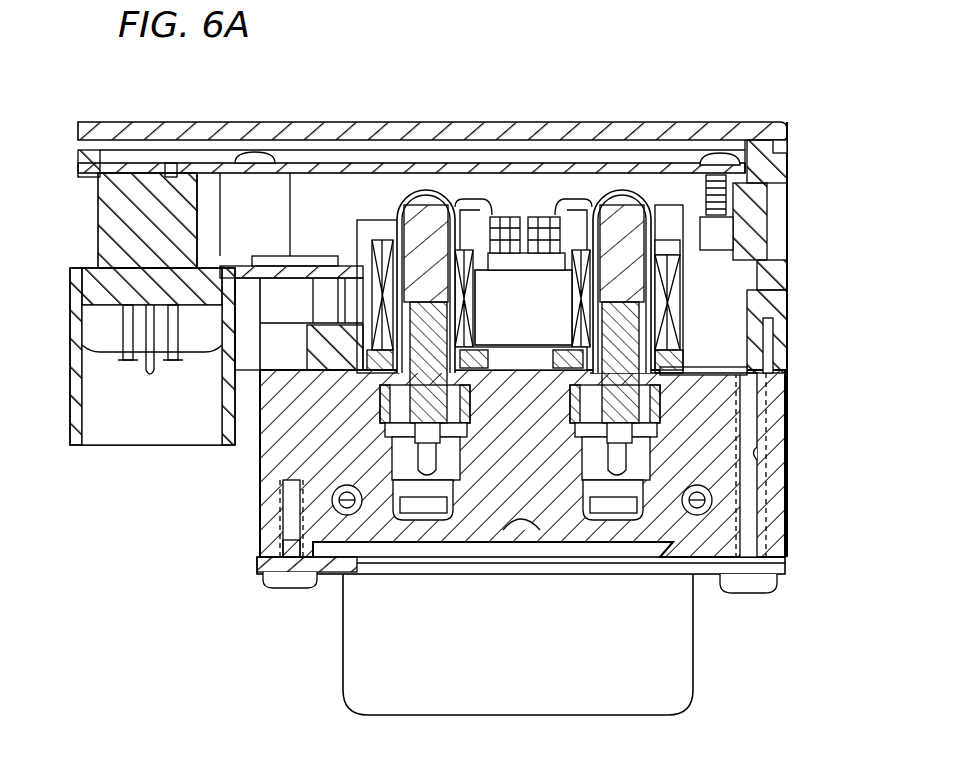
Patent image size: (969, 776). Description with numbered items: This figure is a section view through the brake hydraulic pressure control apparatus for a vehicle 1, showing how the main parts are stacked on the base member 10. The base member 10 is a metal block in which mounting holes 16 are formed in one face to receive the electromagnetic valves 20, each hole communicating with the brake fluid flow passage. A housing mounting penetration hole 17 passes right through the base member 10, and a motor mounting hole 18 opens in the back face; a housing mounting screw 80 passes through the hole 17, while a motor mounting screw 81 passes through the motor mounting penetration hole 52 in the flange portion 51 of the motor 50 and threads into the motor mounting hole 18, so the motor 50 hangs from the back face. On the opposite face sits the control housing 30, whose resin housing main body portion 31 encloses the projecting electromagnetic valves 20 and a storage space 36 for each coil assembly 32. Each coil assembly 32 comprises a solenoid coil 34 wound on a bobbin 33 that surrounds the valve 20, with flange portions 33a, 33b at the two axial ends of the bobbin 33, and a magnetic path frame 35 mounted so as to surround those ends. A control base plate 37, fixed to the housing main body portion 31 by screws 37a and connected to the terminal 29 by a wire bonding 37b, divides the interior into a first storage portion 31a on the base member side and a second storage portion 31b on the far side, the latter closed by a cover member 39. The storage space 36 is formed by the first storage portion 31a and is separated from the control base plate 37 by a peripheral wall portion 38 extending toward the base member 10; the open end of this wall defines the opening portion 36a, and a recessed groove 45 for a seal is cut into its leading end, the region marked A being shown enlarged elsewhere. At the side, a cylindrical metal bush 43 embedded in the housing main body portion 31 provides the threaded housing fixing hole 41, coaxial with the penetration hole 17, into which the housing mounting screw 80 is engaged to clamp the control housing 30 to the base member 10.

The brake hydraulic pressure control apparatus for a vehicle 1 is at (662, 88).
The base member 10 is at (786, 520).
The mounting holes 16 is at (383, 427).
The housing mounting penetration hole 17 is at (757, 452).
The motor mounting hole 18 is at (285, 503).
The electromagnetic valve 20 is at (427, 190).
The terminal 29 is at (84, 167).
The control housing 30 is at (100, 215).
The housing main body portion 31 is at (130, 225).
The first storage portion 31a is at (333, 222).
The second storage portion 31b is at (188, 140).
The coil assembly 32 is at (504, 199).
The bobbin 33 is at (476, 284).
The flange portion 33a is at (473, 265).
The flange portion 33b is at (480, 352).
The solenoid coil 34 is at (375, 258).
The magnetic path frame 35 is at (396, 252).
The storage space 36 is at (562, 312).
The opening portion 36a is at (520, 372).
The control base plate 37 is at (670, 168).
The screws 37a is at (255, 156).
The wire bonding 37b is at (166, 163).
The peripheral wall portion 38 is at (770, 272).
The cover member 39 is at (130, 129).
The housing fixing hole 41 is at (770, 305).
The bush 43 is at (768, 325).
The recessed groove 45 is at (770, 378).
The motor 50 is at (530, 714).
The flange portion 51 is at (264, 574).
The motor mounting penetration hole 52 is at (298, 574).
The housing mounting screw 80 is at (750, 488).
The motor mounting screw 81 is at (285, 530).
The A portion A is at (260, 430).